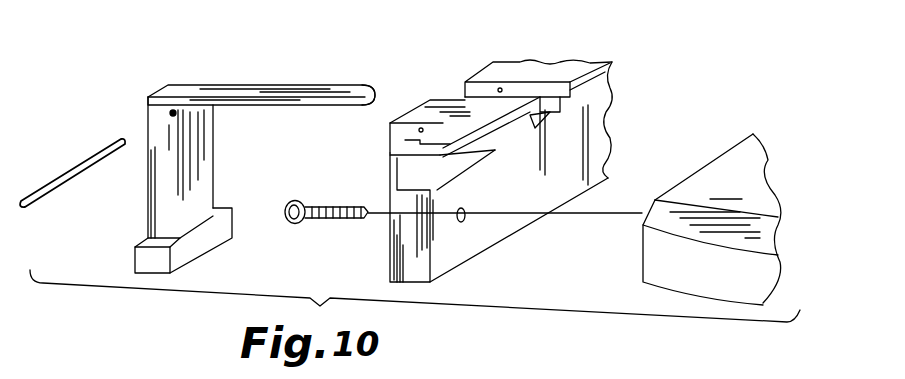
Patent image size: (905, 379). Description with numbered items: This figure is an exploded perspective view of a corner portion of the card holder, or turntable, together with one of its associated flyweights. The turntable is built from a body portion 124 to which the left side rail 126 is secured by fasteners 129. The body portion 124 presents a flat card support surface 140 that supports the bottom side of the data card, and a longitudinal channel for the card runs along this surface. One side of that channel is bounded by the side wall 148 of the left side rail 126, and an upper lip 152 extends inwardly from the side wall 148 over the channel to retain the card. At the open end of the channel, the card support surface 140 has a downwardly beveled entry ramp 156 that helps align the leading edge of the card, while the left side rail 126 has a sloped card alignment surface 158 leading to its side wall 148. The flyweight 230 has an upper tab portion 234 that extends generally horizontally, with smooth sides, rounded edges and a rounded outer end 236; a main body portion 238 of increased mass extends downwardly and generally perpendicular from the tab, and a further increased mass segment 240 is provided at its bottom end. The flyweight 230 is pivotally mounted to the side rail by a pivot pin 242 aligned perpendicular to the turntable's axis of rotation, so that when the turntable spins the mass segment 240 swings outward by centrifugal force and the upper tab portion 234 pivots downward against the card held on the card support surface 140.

The body portion 124 is at (727, 143).
The left side rail 126 is at (573, 138).
The fasteners 129 is at (335, 222).
The card support surface 140 is at (716, 175).
The side wall 148 is at (583, 93).
The upper lip 152 is at (617, 69).
The entry ramp 156 is at (723, 228).
The sloped card alignment surface 158 is at (428, 168).
The flyweight 230 is at (152, 97).
The upper tab portion 234 is at (240, 88).
The rounded outer end 236 is at (361, 85).
The main body portion 238 is at (205, 155).
The increased mass segment 240 is at (190, 262).
The pivot pin 242 is at (62, 183).